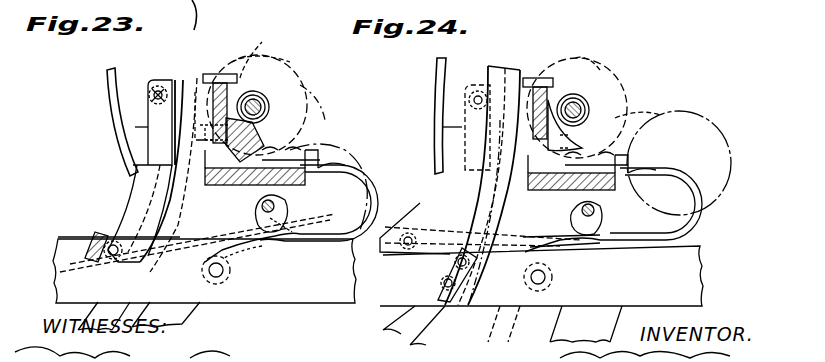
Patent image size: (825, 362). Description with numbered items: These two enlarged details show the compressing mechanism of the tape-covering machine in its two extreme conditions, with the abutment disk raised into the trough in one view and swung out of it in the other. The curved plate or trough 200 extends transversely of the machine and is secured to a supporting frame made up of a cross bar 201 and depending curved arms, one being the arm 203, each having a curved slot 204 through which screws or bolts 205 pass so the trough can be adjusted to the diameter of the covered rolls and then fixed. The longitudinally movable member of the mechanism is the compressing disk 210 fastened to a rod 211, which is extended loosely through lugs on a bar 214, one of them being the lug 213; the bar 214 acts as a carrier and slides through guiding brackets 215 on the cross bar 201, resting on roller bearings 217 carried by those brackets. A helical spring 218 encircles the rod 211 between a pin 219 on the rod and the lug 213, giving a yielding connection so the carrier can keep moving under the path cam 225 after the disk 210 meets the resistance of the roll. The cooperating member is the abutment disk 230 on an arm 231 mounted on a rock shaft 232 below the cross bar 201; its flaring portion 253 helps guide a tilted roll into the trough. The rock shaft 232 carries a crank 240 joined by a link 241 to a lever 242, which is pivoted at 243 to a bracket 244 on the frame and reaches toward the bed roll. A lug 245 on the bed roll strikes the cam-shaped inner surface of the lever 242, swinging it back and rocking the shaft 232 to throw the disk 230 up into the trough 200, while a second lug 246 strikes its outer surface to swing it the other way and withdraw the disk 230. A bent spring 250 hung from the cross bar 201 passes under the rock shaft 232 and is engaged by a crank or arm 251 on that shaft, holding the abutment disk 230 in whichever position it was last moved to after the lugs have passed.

In FIG. 23, the curved plate or trough 200 is at (316, 116).
In FIG. 24, the curved plate or trough 200 is at (684, 108).
In FIG. 24, the cross bar 201 is at (630, 186).
In FIG. 23, the depending curved arm 203 is at (236, 322).
In FIG. 24, the depending curved arm 203 is at (560, 316).
In FIG. 23, the curved slot 204 is at (205, 305).
In FIG. 23, the screws or bolts 205 is at (224, 270).
In FIG. 24, the screws or bolts 205 is at (552, 280).
In FIG. 23, the compressing disk 210 is at (310, 90).
In FIG. 24, the compressing disk 210 is at (582, 56).
In FIG. 23, the rod 211 is at (283, 58).
In FIG. 24, the rod 211 is at (625, 100).
In FIG. 23, the lug or arm 213 is at (264, 46).
In FIG. 23, the bar or carrier 214 is at (254, 98).
In FIG. 24, the bar or carrier 214 is at (578, 98).
In FIG. 23, the guiding brackets 215 is at (306, 150).
In FIG. 24, the guiding brackets 215 is at (632, 158).
In FIG. 23, the roller bearings 217 is at (258, 132).
In FIG. 24, the roller bearings 217 is at (565, 125).
In FIG. 23, the helical spring 218 is at (265, 106).
In FIG. 24, the helical spring 218 is at (584, 104).
In FIG. 23, the pin 219 is at (256, 92).
In FIG. 24, the pin 219 is at (586, 98).
In FIG. 23, the path cam 225 is at (248, 80).
In FIG. 24, the path cam 225 is at (451, 334).
In FIG. 23, the abutment disk 230 is at (302, 72).
In FIG. 24, the abutment disk 230 is at (730, 148).
In FIG. 23, the arm 231 is at (250, 193).
In FIG. 24, the arm 231 is at (614, 246).
In FIG. 23, the rock shaft 232 is at (350, 165).
In FIG. 24, the rock shaft 232 is at (578, 183).
In FIG. 23, the crank 240 is at (296, 232).
In FIG. 24, the crank 240 is at (572, 220).
In FIG. 23, the link 241 is at (218, 238).
In FIG. 24, the link 241 is at (505, 262).
In FIG. 23, the lever 242 is at (103, 232).
In FIG. 24, the lever 242 is at (480, 200).
In FIG. 23, the pivot 243 is at (150, 88).
In FIG. 24, the pivot 243 is at (480, 86).
In FIG. 23, the bracket 244 is at (178, 88).
In FIG. 24, the bracket 244 is at (514, 80).
In FIG. 23, the lug or projection 245 is at (72, 250).
In FIG. 24, the lug or projection 246 is at (440, 268).
In FIG. 23, the bent spring 250 is at (372, 183).
In FIG. 24, the bent spring 250 is at (700, 224).
In FIG. 23, the crank or arm 251 is at (284, 208).
In FIG. 24, the crank or arm 251 is at (580, 236).
In FIG. 23, the flaring portion 253 is at (173, 15).